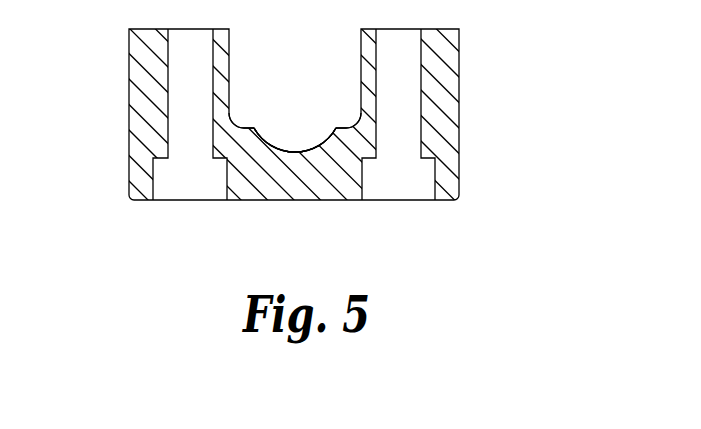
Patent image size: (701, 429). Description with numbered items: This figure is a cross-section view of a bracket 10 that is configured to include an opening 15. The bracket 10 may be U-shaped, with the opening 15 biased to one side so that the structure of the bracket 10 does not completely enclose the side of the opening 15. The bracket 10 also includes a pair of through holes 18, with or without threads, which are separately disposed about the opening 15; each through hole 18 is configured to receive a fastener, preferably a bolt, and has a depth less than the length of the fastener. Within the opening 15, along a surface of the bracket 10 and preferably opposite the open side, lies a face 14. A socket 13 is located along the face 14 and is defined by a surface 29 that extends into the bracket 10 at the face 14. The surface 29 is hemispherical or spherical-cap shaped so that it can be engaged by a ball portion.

The bracket 10 is at (479, 147).
The socket 13 is at (290, 136).
The face 14 is at (337, 130).
The opening 15 is at (280, 65).
The through hole 18 is at (185, 96).
The surface 29 is at (281, 151).